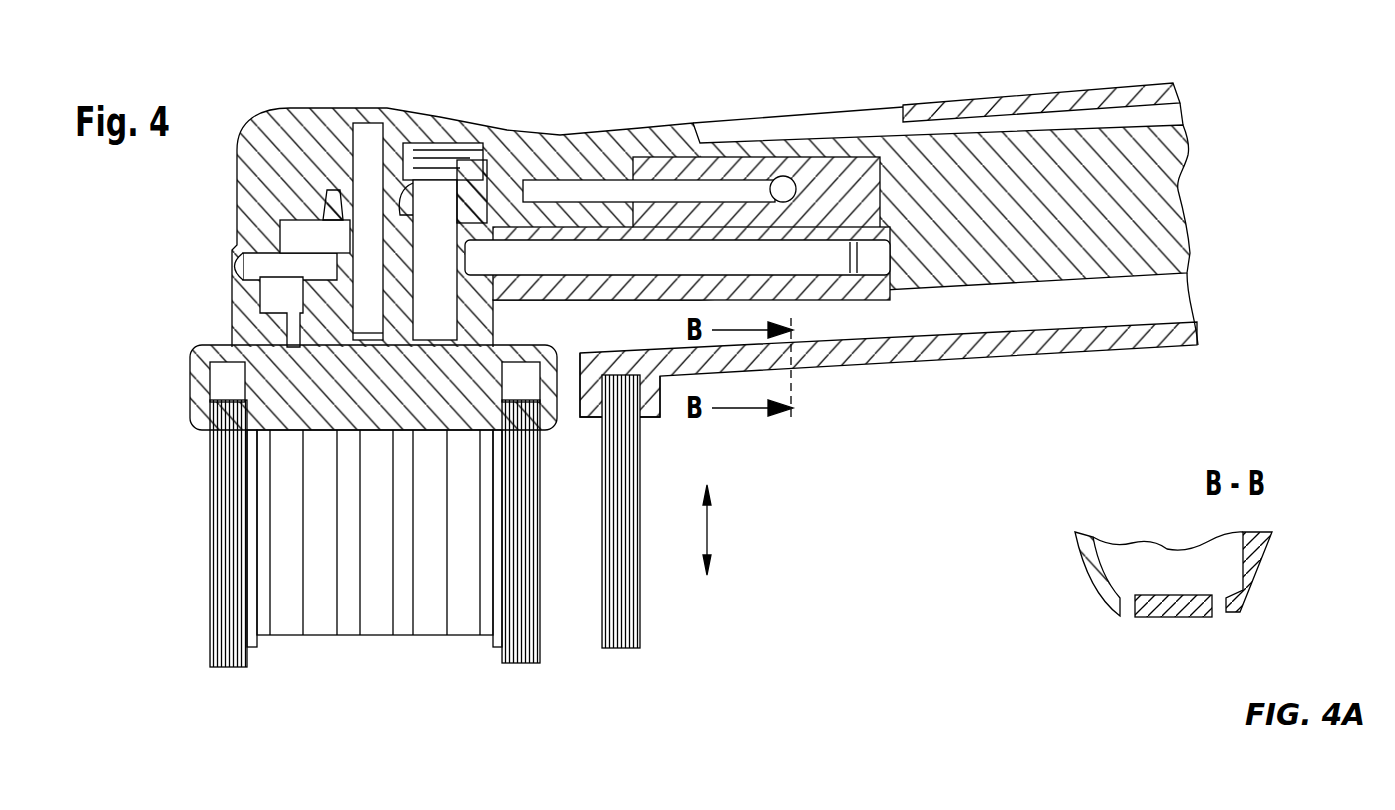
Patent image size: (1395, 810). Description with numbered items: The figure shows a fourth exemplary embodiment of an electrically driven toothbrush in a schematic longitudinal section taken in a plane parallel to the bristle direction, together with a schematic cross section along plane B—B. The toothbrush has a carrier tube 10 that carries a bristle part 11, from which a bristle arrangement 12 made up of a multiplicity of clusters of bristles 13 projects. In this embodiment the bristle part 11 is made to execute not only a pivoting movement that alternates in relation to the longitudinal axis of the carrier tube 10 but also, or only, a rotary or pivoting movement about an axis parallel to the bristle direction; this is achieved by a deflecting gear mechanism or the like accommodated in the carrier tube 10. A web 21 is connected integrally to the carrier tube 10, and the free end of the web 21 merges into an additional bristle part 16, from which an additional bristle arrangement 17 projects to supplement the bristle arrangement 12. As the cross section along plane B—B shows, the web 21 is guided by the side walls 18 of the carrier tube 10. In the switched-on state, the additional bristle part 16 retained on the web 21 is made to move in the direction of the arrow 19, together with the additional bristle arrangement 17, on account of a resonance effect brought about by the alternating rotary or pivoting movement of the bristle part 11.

In FIG. 4, the carrier tube 10 is at (958, 95).
In FIG. 4, the bristle part 11 is at (270, 380).
In FIG. 4, the bristle arrangement 12 is at (300, 545).
In FIG. 4, the clusters of bristles 13 is at (229, 668).
In FIG. 4, the additional bristle part 16 is at (593, 418).
In FIG. 4, the additional bristle arrangement 17 is at (621, 650).
In FIG. 4A, the side walls 18 is at (1095, 585).
In FIG. 4, the arrow 19 is at (712, 528).
In FIG. 4, the web 21 is at (895, 358).
In FIG. 4A, the web 21 is at (1170, 620).